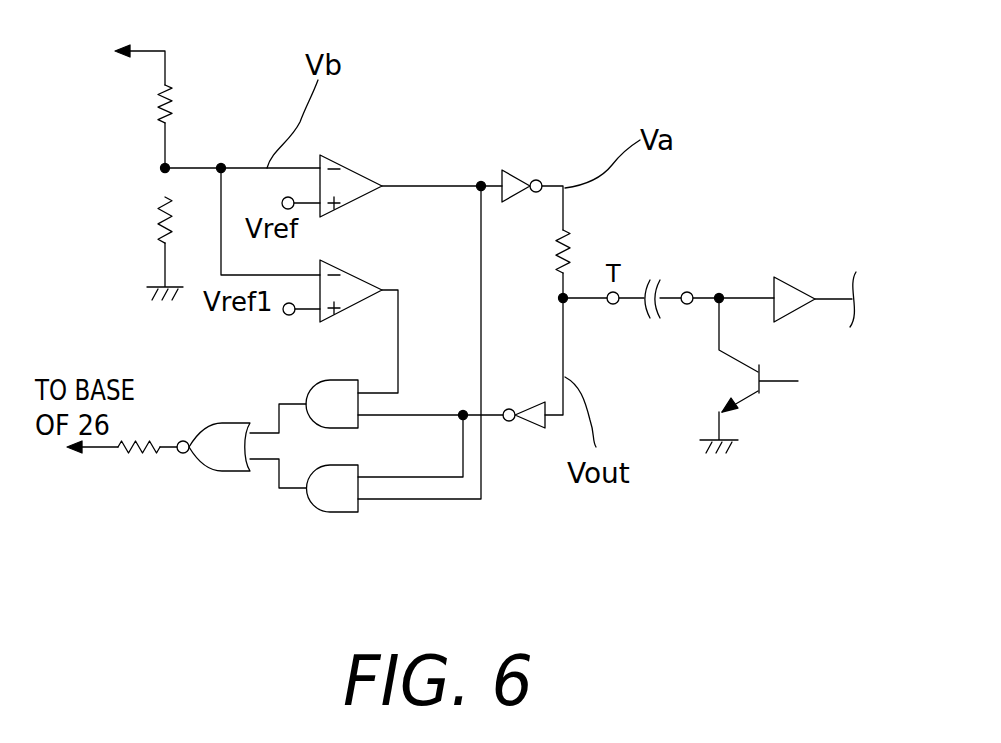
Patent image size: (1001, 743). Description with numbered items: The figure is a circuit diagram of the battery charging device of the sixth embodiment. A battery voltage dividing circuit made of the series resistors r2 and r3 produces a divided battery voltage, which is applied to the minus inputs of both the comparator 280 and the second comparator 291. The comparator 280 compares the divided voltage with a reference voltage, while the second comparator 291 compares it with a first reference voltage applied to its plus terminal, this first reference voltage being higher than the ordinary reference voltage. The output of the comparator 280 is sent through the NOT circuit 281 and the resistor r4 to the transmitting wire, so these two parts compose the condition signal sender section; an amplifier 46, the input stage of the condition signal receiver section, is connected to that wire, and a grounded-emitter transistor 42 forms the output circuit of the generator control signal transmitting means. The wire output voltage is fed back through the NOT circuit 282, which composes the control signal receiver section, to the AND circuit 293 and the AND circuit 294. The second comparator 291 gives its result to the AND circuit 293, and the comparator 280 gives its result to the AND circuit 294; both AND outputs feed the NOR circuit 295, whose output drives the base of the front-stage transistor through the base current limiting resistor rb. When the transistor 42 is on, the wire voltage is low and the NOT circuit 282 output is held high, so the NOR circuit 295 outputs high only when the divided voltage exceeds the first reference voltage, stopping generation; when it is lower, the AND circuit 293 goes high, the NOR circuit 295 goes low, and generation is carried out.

The resistor r2 is at (168, 92).
The resistor r3 is at (156, 210).
The resistor r4 is at (580, 234).
The base current limiting resistor rb is at (132, 455).
The comparator 280 is at (358, 178).
The second comparator 291 is at (364, 288).
The NOT circuit 281 is at (523, 180).
The NOT circuit 282 is at (535, 400).
The AND circuit 293 is at (305, 397).
The AND circuit 294 is at (337, 507).
The NOR circuit 295 is at (222, 472).
The amplifier 46 is at (791, 280).
The transistor 42 is at (750, 397).